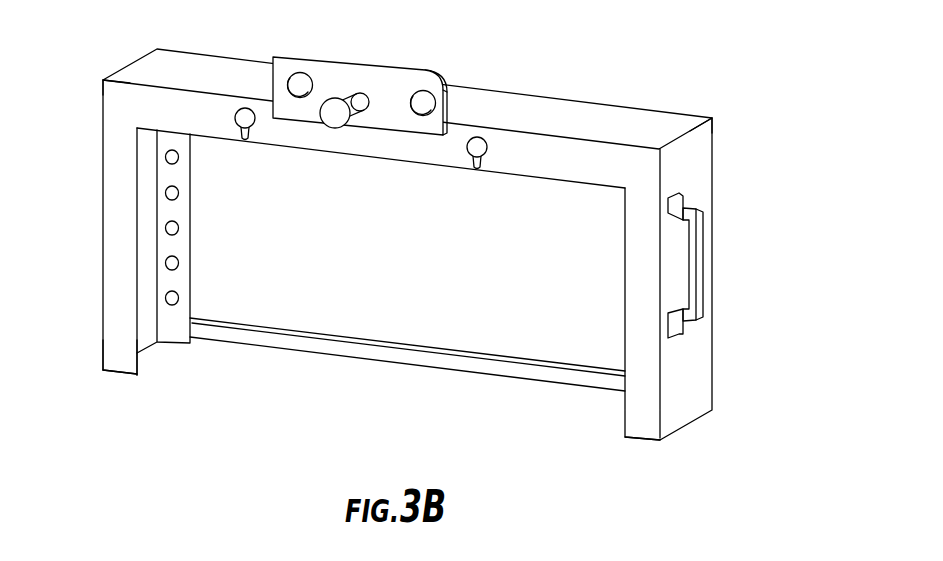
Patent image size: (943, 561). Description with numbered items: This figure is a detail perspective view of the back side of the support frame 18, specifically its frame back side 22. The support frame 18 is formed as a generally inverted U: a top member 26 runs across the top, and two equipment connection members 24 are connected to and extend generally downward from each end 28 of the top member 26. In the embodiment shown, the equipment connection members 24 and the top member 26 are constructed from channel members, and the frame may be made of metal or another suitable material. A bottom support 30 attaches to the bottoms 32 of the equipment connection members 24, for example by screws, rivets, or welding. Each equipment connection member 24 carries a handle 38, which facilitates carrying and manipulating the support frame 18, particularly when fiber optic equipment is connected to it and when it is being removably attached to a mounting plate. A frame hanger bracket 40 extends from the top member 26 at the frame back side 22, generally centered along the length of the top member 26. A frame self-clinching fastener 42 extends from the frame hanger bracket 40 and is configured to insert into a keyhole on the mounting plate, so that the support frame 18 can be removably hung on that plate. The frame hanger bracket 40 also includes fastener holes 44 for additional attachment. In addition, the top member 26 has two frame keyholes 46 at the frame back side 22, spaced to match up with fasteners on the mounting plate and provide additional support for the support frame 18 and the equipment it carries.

The support frame 18 is at (423, 256).
The frame back side 22 is at (122, 338).
The equipment connection member 24 is at (104, 117).
The top member 26 is at (556, 98).
The end of the top member 28 is at (103, 78).
The bottom support 30 is at (266, 350).
The bottom of equipment connection member 32 is at (137, 377).
The handle 38 is at (701, 229).
The frame hanger bracket 40 is at (399, 69).
The frame self-clinching fastener 42 is at (340, 98).
The fastener hole 44 is at (287, 83).
The frame keyhole 46 is at (247, 140).